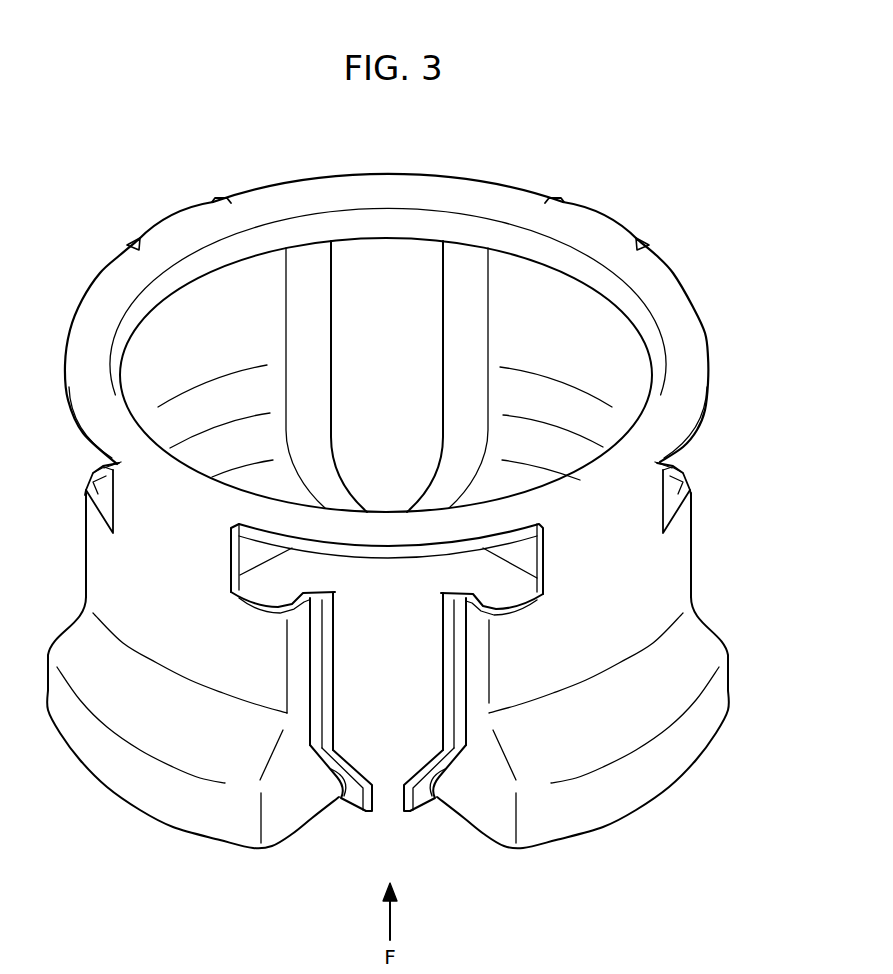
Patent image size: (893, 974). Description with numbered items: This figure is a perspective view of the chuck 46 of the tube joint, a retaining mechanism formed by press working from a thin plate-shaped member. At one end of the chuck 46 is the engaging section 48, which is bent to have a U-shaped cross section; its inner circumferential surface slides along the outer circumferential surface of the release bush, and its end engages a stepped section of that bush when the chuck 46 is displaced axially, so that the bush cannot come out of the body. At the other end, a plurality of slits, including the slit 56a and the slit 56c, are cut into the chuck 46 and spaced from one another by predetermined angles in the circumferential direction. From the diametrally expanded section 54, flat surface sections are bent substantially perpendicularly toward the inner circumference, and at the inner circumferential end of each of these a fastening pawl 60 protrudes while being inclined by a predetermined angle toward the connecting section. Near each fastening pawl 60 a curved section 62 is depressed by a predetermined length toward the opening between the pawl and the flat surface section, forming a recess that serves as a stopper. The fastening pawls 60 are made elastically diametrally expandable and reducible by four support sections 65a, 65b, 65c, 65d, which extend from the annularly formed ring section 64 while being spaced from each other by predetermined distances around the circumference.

The chuck 46 is at (697, 212).
The engaging section 48 is at (208, 264).
The diametrally expanded section 54 is at (118, 772).
The slit 56a is at (382, 256).
The slit 56c is at (386, 786).
The fastening pawl 60 is at (354, 802).
The curved section 62 is at (436, 775).
The ring section 64 is at (680, 338).
The support section 65a is at (176, 217).
The support section 65b is at (596, 217).
The support section 65c is at (603, 515).
The support section 65d is at (167, 533).